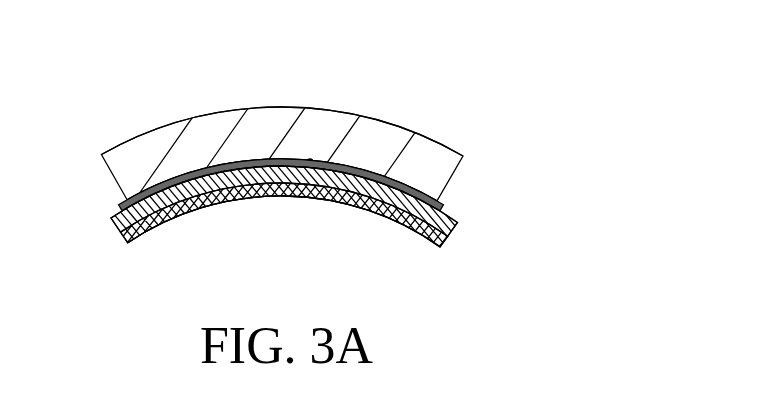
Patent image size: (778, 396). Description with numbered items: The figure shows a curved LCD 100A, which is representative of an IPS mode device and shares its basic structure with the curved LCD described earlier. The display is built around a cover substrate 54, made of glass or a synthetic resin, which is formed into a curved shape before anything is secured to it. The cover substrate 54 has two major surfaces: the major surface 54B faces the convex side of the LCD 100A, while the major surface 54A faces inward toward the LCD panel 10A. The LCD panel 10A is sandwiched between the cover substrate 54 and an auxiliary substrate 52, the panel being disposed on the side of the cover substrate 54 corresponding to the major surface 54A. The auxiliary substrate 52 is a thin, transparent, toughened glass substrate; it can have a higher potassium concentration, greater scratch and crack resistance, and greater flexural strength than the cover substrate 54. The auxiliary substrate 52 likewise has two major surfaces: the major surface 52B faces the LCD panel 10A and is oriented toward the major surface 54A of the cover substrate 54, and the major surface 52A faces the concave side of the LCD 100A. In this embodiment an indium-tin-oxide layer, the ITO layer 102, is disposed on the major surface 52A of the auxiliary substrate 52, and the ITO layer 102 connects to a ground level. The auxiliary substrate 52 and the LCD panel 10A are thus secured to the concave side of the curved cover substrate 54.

The LCD 100A is at (604, 60).
The cover substrate 54 is at (99, 158).
The major surface of the cover substrate 54B is at (206, 116).
The major surface of the cover substrate 54A is at (311, 161).
The LCD panel 10A is at (446, 207).
The auxiliary substrate 52 is at (452, 232).
The major surface of the auxiliary substrate 52B is at (105, 207).
The major surface of the auxiliary substrate 52A is at (182, 216).
The ITO layer 102 is at (443, 248).